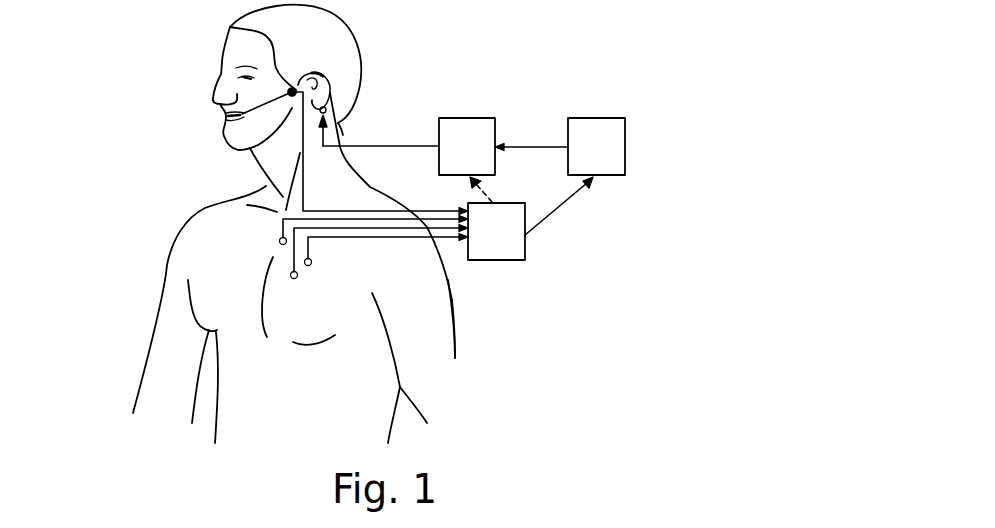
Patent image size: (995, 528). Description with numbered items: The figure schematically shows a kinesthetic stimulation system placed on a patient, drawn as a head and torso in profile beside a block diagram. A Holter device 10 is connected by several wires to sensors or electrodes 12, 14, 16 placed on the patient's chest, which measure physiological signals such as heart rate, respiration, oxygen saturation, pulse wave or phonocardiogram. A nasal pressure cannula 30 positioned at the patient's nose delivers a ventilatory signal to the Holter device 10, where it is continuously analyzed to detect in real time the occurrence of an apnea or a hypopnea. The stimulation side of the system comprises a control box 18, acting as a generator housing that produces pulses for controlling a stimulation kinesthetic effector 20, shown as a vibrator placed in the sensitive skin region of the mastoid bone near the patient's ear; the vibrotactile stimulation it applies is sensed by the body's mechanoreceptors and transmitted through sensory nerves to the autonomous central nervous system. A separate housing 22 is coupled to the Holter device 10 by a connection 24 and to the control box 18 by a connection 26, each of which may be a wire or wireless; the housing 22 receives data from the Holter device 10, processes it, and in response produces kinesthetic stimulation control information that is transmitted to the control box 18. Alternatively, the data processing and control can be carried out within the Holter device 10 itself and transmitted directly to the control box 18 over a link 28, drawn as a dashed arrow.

The Holter device 10 is at (497, 247).
The electrode 12 is at (280, 241).
The electrode 14 is at (297, 276).
The electrode 16 is at (311, 262).
The control box 18 is at (463, 133).
The stimulation kinesthetic effector 20 is at (330, 109).
The housing 22 is at (598, 140).
The connection 24 is at (545, 220).
The connection 26 is at (533, 146).
The link 28 is at (490, 197).
The nasal pressure cannula 30 is at (215, 98).